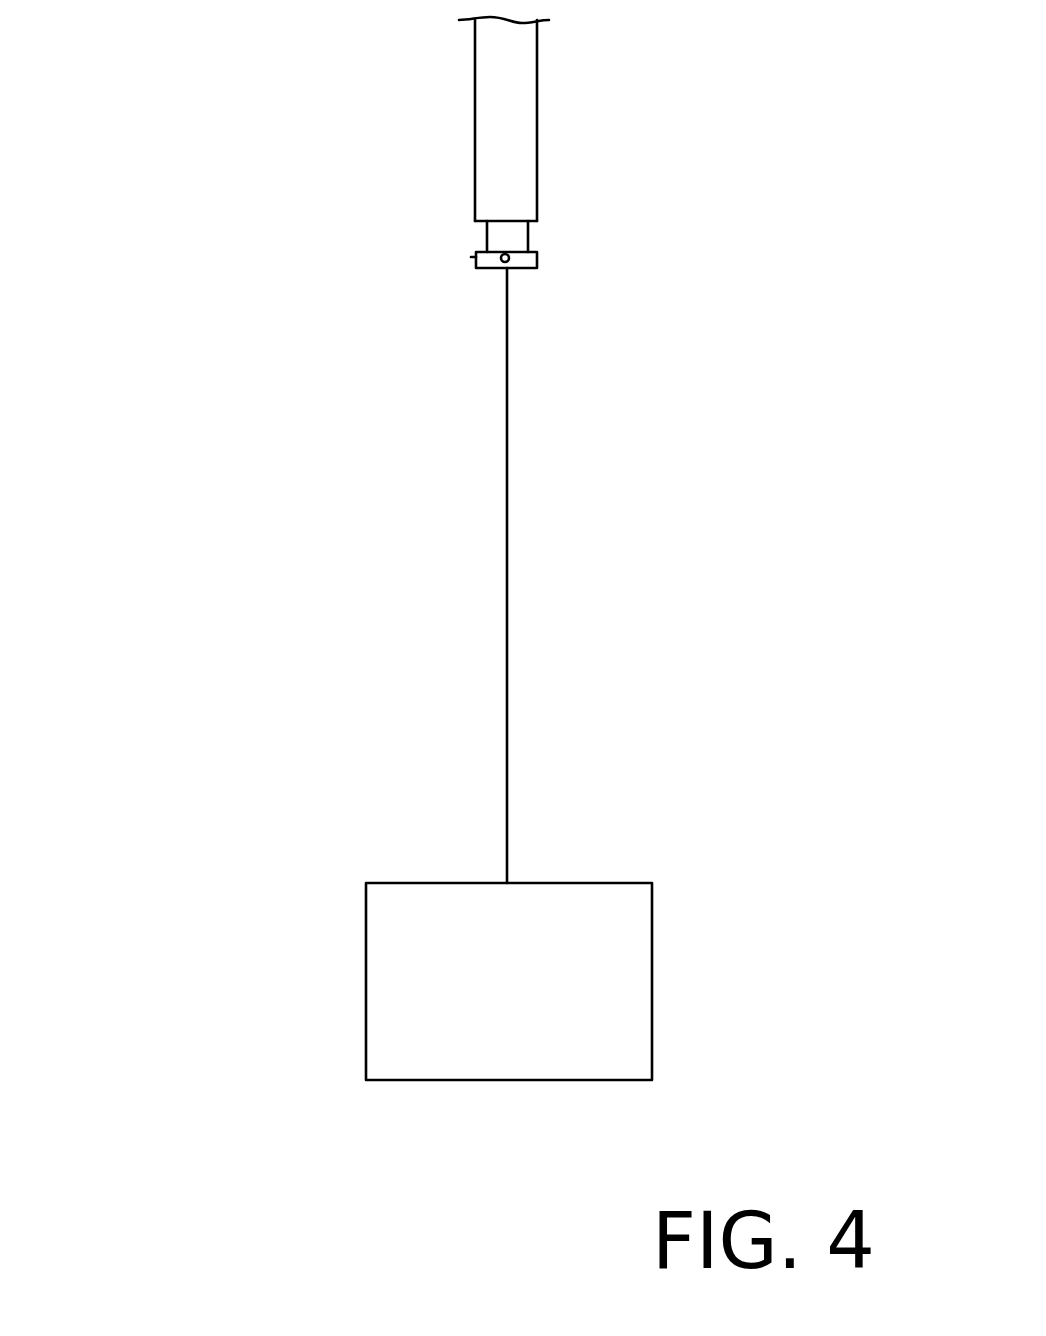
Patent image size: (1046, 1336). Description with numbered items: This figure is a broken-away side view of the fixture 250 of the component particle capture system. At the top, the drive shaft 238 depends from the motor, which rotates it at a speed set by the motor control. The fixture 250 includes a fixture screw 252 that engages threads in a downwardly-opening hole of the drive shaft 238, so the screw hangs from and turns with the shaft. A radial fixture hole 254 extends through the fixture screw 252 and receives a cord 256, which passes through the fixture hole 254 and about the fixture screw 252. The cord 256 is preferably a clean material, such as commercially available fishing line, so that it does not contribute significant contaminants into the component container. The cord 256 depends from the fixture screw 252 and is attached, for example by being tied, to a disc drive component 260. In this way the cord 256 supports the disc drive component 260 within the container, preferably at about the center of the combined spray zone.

The drive shaft 238 is at (515, 78).
The fixture 250 is at (198, 256).
The fixture screw 252 is at (513, 241).
The radial fixture hole 254 is at (512, 265).
The cord 256 is at (508, 505).
The disc drive component 260 is at (595, 902).